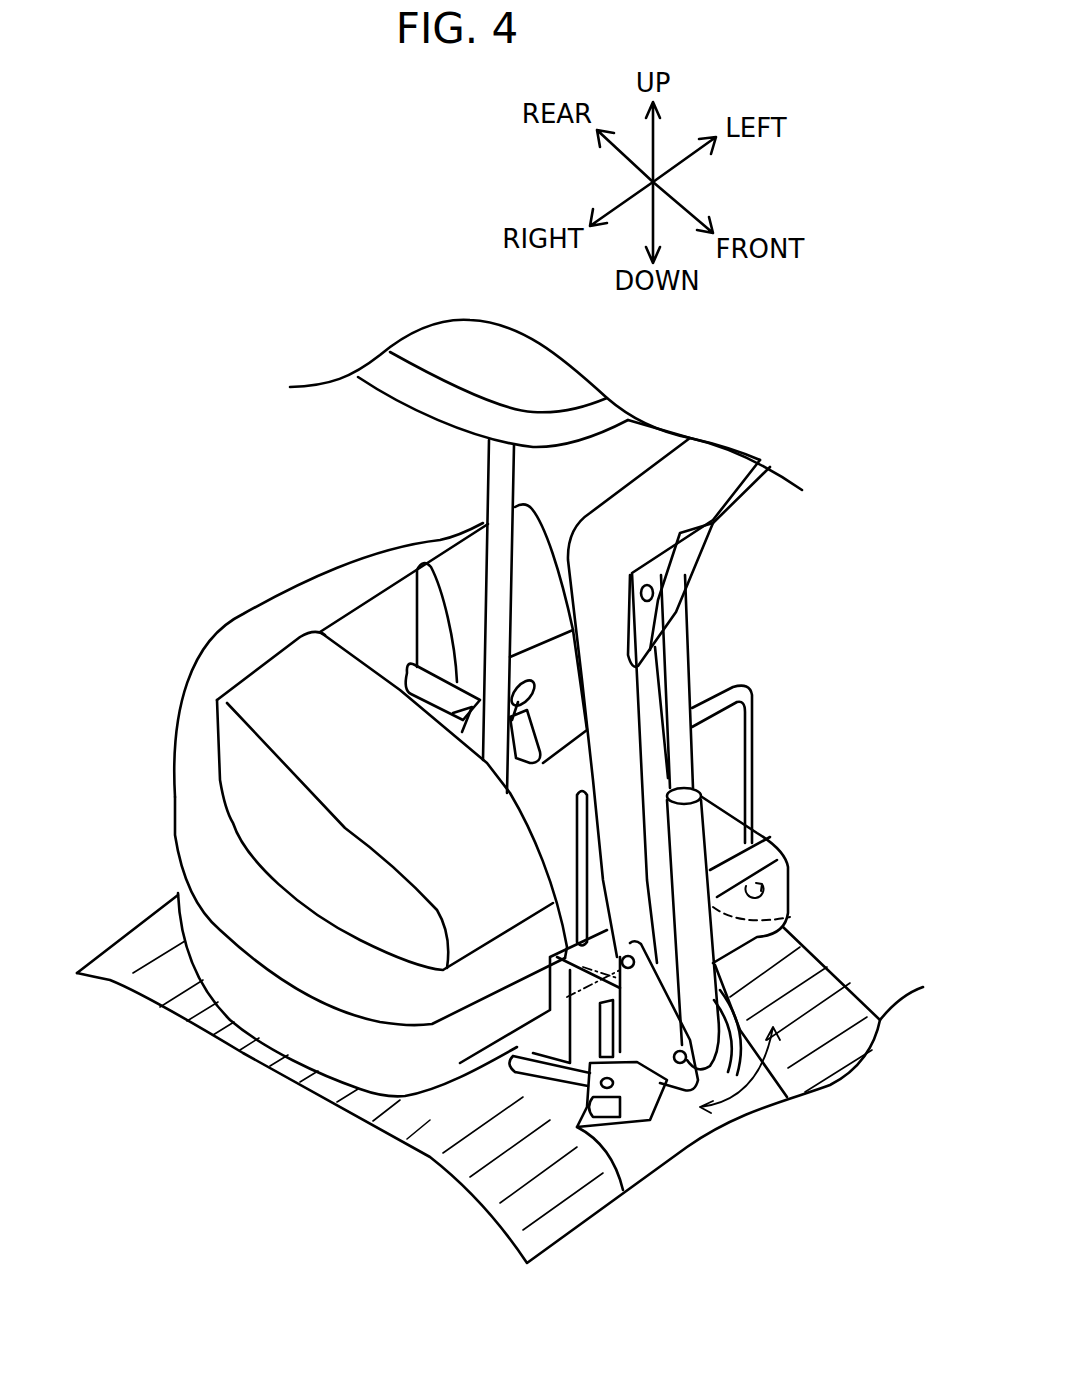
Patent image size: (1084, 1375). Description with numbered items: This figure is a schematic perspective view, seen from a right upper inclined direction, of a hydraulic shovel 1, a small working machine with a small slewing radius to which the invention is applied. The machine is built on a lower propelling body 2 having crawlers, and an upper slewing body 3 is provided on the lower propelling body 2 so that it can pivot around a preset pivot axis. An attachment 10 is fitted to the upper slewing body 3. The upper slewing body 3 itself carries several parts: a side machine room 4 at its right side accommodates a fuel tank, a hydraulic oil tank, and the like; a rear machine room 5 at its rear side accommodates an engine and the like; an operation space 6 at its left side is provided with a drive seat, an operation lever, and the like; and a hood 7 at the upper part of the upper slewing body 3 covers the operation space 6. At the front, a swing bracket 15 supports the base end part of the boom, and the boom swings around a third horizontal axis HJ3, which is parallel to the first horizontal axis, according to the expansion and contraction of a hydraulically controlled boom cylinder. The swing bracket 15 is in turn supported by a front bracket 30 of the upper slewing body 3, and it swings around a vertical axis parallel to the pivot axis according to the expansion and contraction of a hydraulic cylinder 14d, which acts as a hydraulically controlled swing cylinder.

The hydraulic shovel 1 is at (225, 350).
The lower propelling body 2 is at (503, 1173).
The upper slewing body 3 is at (284, 546).
The side machine room 4 is at (283, 1018).
The rear machine room 5 is at (260, 637).
The operation space 6 is at (436, 468).
The hood 7 is at (460, 340).
The attachment 10 is at (693, 487).
The hydraulic cylinder 14d is at (493, 1060).
The swing bracket 15 is at (677, 1070).
The front bracket 30 is at (583, 1037).
The third horizontal axis HJ3 is at (790, 917).